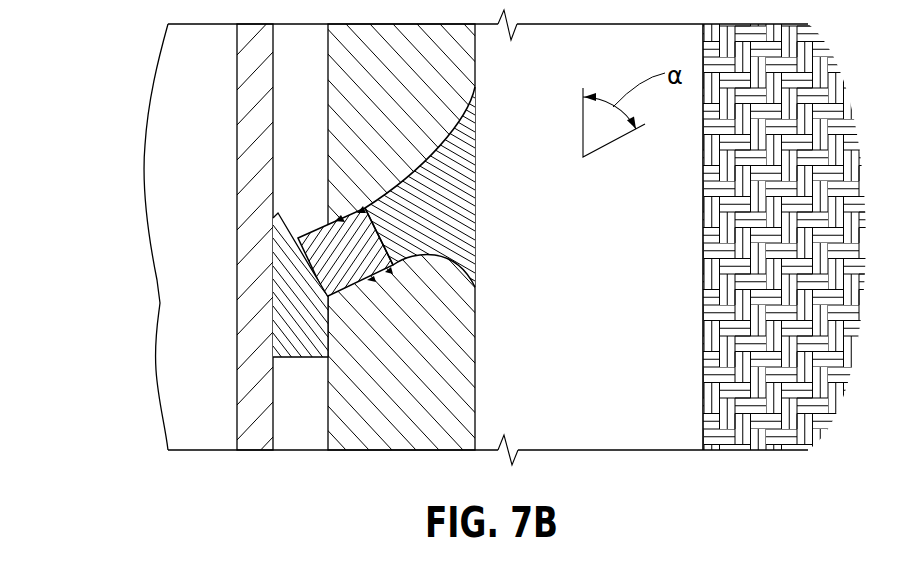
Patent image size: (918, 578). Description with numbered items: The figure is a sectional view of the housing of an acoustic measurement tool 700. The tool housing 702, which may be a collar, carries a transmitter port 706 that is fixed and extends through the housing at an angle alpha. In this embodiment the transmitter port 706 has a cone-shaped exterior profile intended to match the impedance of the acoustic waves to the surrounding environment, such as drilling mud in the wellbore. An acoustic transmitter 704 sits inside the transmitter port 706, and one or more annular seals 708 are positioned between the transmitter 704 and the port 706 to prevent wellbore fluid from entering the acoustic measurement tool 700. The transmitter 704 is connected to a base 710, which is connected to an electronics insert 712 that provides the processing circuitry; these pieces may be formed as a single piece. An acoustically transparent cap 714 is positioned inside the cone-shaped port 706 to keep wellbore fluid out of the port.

The acoustic measurement tool 700 is at (105, 212).
The tool housing 702 is at (452, 88).
The acoustic transmitter 704 is at (376, 228).
The transmitter port 706 is at (440, 167).
The annular seal 708 is at (357, 212).
The base 710 is at (297, 312).
The electronics insert 712 is at (255, 118).
The cap 714 is at (467, 240).